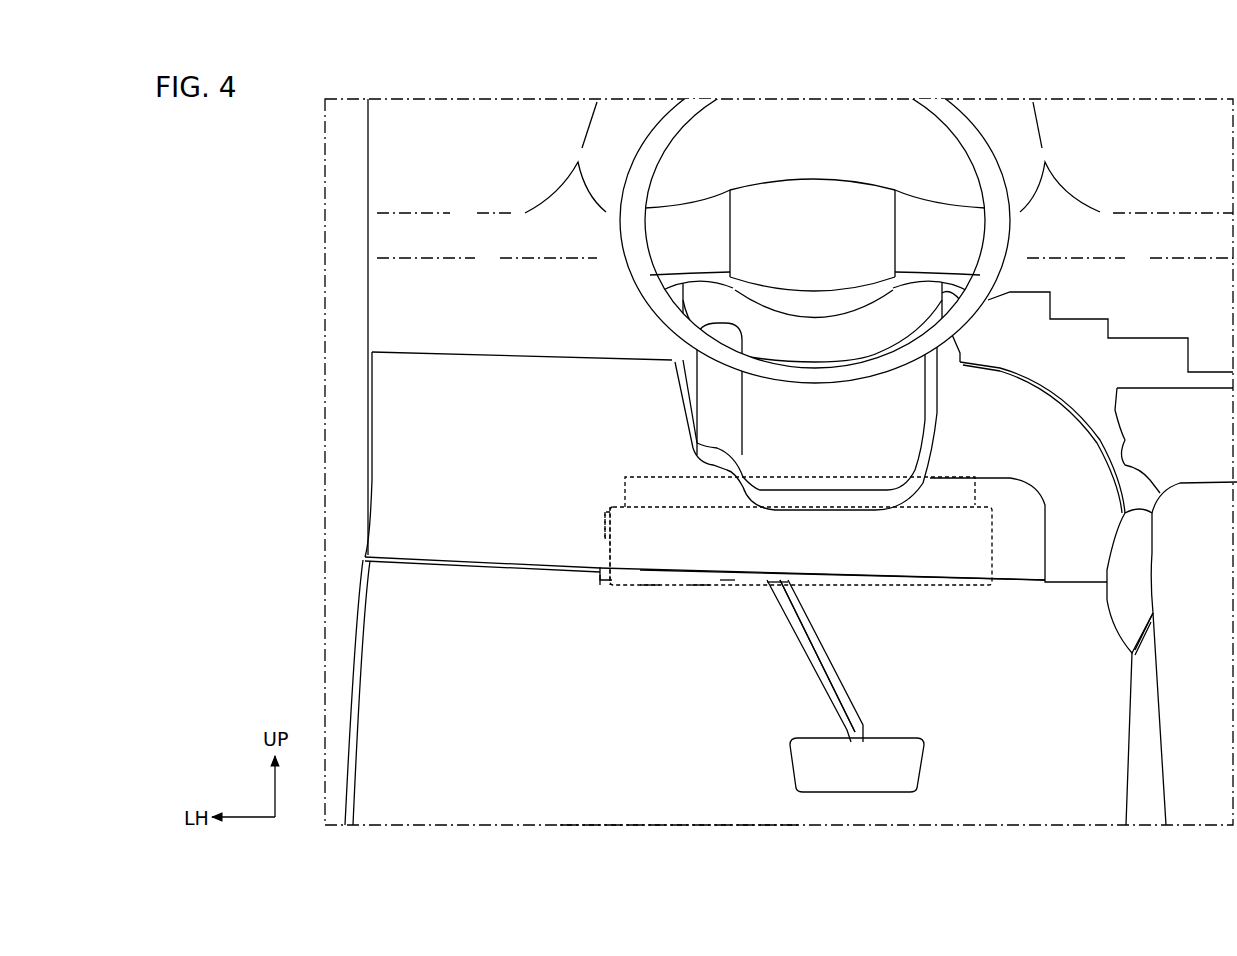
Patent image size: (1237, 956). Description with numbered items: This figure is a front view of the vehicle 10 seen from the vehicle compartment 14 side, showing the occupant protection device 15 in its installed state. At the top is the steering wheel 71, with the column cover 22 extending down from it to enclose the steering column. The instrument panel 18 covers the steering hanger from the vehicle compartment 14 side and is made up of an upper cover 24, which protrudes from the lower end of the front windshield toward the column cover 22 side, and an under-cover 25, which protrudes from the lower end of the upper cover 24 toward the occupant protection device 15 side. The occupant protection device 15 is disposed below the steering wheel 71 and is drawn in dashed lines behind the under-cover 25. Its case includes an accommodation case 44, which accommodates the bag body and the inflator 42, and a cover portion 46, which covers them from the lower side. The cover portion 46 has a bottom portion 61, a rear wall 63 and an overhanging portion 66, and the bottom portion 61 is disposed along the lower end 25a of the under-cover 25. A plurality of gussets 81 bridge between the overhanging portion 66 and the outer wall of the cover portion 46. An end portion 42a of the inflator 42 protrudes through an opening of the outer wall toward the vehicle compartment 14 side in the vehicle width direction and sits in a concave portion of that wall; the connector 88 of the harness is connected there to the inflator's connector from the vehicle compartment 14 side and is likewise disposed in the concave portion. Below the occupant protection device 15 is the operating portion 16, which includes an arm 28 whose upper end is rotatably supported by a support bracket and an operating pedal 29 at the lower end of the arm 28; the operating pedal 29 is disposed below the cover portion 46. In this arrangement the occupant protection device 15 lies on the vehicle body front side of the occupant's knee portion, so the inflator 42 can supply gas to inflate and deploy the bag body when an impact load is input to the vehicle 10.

The vehicle 10 is at (298, 147).
The steering wheel 71 is at (973, 150).
The instrument panel 18 is at (413, 232).
The upper cover 24 is at (390, 298).
The under-cover 25 is at (390, 438).
The lower end of the under-cover 25a is at (863, 572).
The column cover 22 is at (930, 402).
The accommodation case 44 is at (620, 475).
The inflator 42 is at (801, 546).
The end portion of the inflator 42a is at (608, 510).
The connector of the harness 88 is at (607, 518).
The gussets 81 is at (600, 575).
The overhanging portion 66 is at (600, 587).
The occupant protection device 15 is at (653, 600).
The cover portion 46 is at (700, 588).
The rear wall 63 is at (725, 578).
The bottom portion 61 is at (818, 588).
The operating portion 16 is at (835, 663).
The arm 28 is at (812, 643).
The operating pedal 29 is at (903, 762).
The vehicle compartment 14 is at (683, 787).